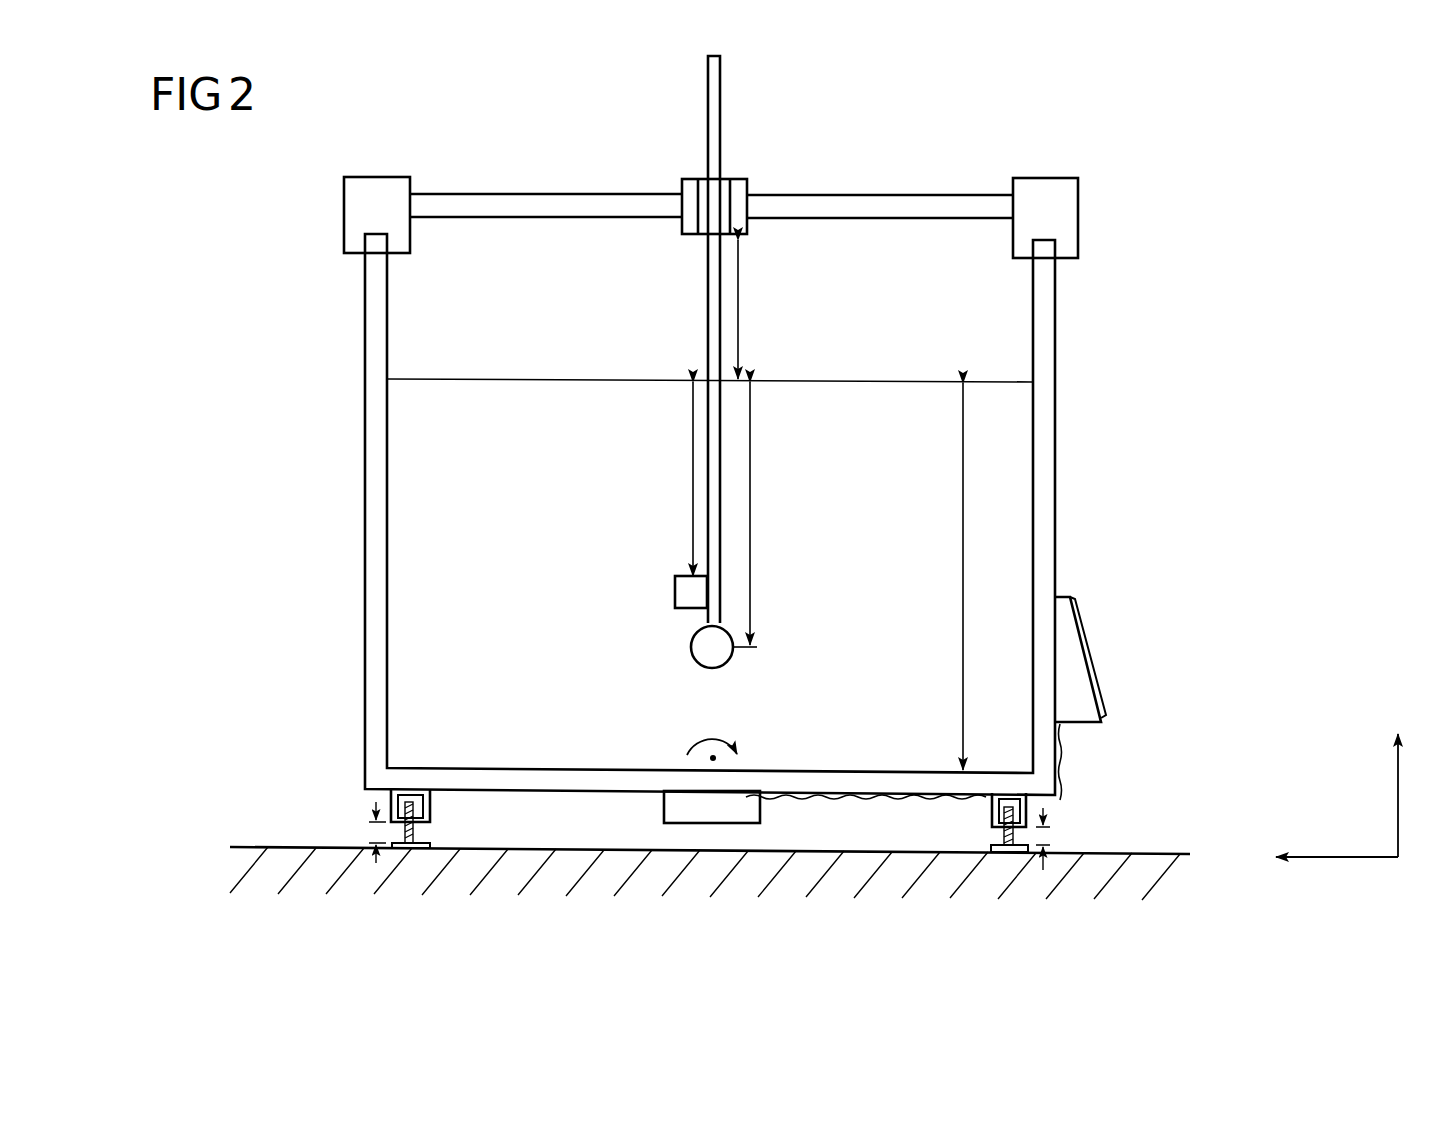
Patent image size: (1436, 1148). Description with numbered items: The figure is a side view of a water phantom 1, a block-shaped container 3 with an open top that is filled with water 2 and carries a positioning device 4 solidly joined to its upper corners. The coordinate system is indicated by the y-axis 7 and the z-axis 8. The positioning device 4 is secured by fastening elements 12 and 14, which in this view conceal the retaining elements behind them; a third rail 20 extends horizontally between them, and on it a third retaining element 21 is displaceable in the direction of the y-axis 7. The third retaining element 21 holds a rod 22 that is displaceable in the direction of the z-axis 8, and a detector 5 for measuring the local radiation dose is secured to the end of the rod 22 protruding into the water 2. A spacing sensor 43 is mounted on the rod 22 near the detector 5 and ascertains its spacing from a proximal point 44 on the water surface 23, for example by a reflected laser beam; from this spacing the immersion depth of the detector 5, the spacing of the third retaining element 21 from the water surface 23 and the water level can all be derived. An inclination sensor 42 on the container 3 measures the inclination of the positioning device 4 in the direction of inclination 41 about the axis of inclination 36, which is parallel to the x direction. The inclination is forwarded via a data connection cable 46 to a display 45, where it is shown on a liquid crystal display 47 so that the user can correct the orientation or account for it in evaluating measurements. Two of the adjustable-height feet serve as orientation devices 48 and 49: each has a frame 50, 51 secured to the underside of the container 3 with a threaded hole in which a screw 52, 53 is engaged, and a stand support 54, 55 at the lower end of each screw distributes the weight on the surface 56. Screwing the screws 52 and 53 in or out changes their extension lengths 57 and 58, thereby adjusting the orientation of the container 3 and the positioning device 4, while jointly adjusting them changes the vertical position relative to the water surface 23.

The water phantom 1 is at (234, 266).
The water 2 is at (410, 450).
The container 3 is at (375, 570).
The positioning device 4 is at (878, 172).
The detector 5 is at (695, 647).
The y-axis 7 is at (1315, 857).
The z-axis 8 is at (1398, 770).
The fastening element 12 is at (352, 202).
The fastening element 14 is at (1068, 206).
The third rail 20 is at (537, 207).
The third retaining element 21 is at (712, 200).
The rod 22 is at (708, 97).
The water surface 23 is at (480, 378).
The axis of inclination 36 is at (713, 758).
The direction of inclination 41 is at (718, 742).
The inclination sensor 42 is at (665, 808).
The spacing sensor 43 is at (676, 590).
The proximal point 44 is at (693, 379).
The display 45 is at (1097, 588).
The data connection cable 46 is at (1063, 750).
The liquid crystal display 47 is at (1093, 652).
The orientation device 48 is at (350, 808).
The orientation device 49 is at (1074, 813).
The frame 50 is at (428, 808).
The frame 51 is at (992, 815).
The screw 52 is at (413, 835).
The screw 53 is at (1003, 843).
The stand support 54 is at (400, 848).
The stand support 55 is at (1003, 853).
The surface 56 is at (243, 847).
The extension length 57 is at (372, 828).
The extension length 58 is at (1050, 836).